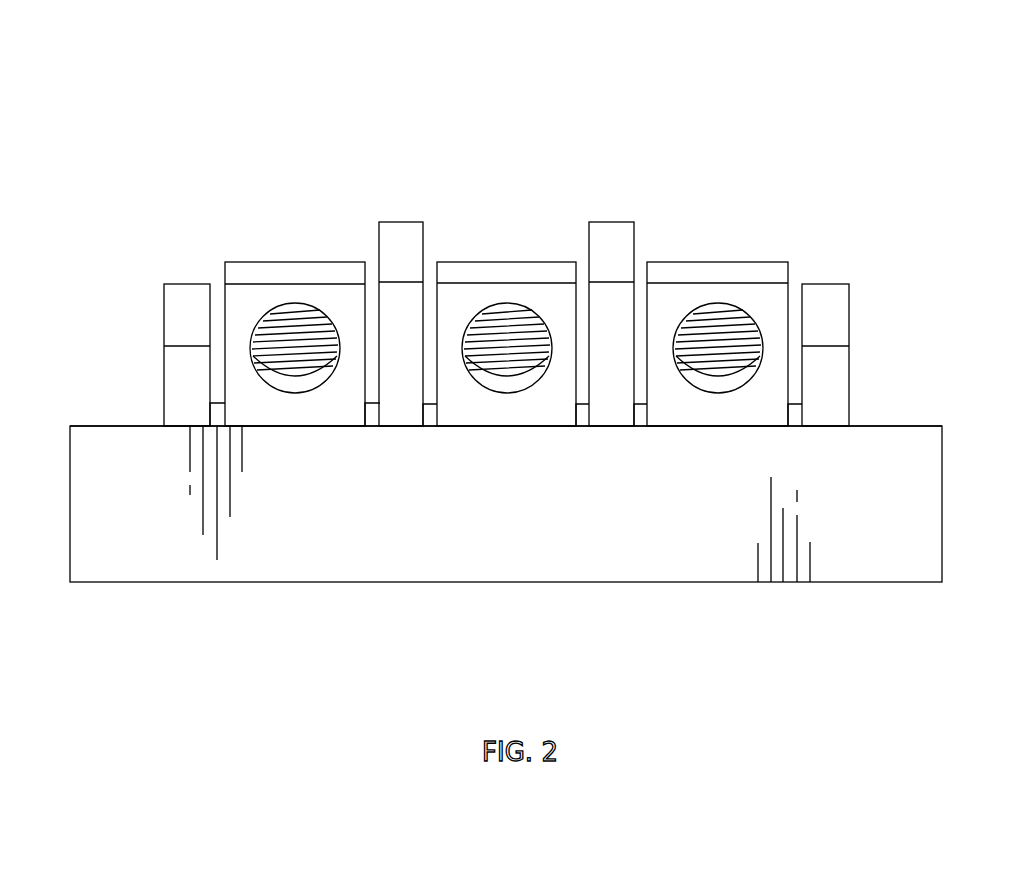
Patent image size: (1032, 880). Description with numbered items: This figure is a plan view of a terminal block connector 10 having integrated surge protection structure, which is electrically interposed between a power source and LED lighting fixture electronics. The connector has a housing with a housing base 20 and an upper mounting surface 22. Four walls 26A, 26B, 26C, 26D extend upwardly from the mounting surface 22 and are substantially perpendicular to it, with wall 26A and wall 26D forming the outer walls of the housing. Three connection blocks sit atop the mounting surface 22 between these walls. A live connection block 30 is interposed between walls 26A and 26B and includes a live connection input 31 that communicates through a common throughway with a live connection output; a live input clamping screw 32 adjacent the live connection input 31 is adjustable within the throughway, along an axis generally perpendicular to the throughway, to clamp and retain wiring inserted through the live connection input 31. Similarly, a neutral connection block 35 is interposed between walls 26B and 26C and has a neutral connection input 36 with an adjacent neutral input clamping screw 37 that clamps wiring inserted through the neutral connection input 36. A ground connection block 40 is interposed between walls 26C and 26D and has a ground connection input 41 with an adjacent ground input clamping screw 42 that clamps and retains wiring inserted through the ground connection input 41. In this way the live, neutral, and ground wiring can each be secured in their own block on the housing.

The terminal block connector 10 is at (188, 112).
The housing base 20 is at (902, 503).
The upper mounting surface 22 is at (902, 402).
The outer wall 26A is at (177, 297).
The wall 26B is at (400, 232).
The wall 26C is at (615, 235).
The outer wall 26D is at (830, 297).
The live connection block 30 is at (313, 272).
The live connection input 31 is at (295, 393).
The live input clamping screw 32 is at (290, 318).
The neutral connection block 35 is at (485, 272).
The neutral connection input 36 is at (507, 393).
The neutral input clamping screw 37 is at (507, 318).
The ground connection block 40 is at (675, 273).
The ground connection input 41 is at (722, 393).
The ground input clamping screw 42 is at (732, 318).